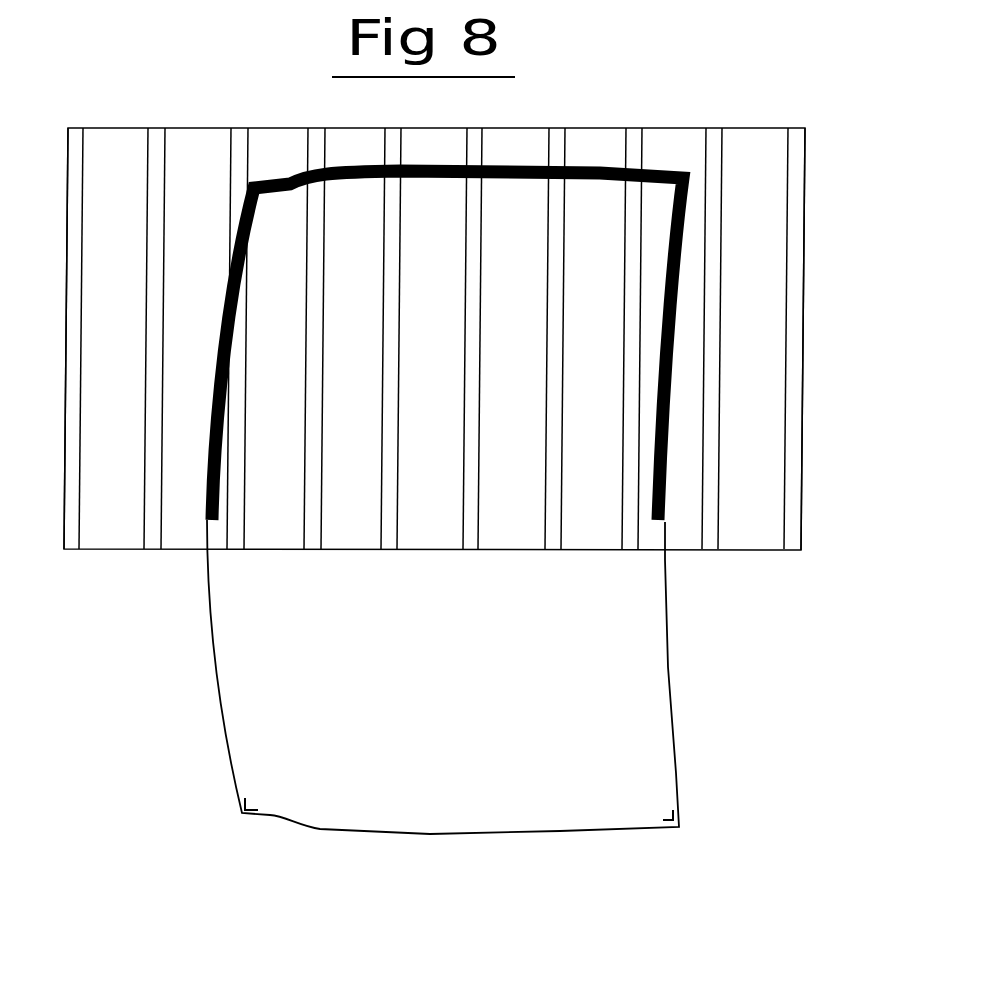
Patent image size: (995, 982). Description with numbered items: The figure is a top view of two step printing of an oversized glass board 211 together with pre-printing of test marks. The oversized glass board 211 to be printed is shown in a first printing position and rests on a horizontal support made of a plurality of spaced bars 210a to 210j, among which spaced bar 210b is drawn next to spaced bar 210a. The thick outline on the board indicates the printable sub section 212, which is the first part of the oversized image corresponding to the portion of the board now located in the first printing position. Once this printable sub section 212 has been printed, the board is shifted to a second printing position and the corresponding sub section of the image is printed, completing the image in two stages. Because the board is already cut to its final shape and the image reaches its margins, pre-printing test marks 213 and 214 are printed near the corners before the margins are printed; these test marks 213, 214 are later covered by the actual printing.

The spaced bar 210a is at (801, 153).
The spaced bar 210b is at (712, 538).
The spaced bar 210j is at (80, 168).
The oversized glass board 211 is at (630, 688).
The printable sub section 212 is at (657, 170).
The pre-printing test mark 213 is at (240, 805).
The pre-printing test mark 214 is at (680, 815).